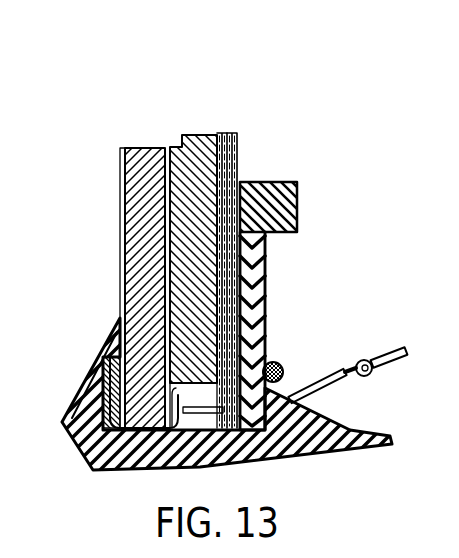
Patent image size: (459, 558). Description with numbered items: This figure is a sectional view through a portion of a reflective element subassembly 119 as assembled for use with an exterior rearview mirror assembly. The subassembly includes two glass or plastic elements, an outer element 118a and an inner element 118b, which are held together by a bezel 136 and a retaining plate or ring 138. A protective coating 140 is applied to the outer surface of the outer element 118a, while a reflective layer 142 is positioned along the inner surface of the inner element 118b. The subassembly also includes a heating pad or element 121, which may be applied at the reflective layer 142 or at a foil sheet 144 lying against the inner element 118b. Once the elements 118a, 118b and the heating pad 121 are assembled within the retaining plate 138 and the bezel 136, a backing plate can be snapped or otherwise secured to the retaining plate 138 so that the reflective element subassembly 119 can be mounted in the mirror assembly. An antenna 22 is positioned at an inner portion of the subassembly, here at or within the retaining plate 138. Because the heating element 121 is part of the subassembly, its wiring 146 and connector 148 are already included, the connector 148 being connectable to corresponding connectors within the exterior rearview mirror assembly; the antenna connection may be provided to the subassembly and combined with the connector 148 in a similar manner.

The antenna 22 is at (287, 335).
The outer element 118a is at (150, 146).
The inner element 118b is at (204, 133).
The reflective element subassembly 119 is at (318, 278).
The heating pad 121 is at (243, 170).
The bezel 136 is at (148, 472).
The retaining plate 138 is at (265, 283).
The protective coating 140 is at (120, 230).
The reflective layer 142 is at (218, 130).
The foil sheet 144 is at (240, 158).
The wiring 146 is at (306, 387).
The connector 148 is at (403, 362).